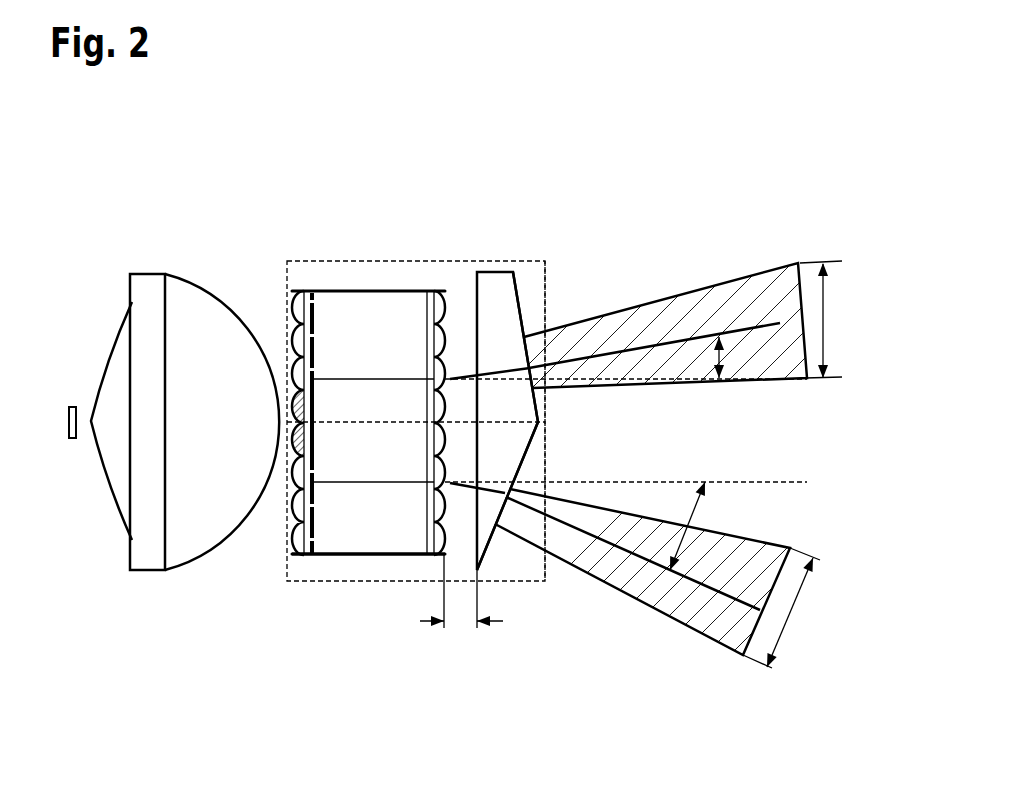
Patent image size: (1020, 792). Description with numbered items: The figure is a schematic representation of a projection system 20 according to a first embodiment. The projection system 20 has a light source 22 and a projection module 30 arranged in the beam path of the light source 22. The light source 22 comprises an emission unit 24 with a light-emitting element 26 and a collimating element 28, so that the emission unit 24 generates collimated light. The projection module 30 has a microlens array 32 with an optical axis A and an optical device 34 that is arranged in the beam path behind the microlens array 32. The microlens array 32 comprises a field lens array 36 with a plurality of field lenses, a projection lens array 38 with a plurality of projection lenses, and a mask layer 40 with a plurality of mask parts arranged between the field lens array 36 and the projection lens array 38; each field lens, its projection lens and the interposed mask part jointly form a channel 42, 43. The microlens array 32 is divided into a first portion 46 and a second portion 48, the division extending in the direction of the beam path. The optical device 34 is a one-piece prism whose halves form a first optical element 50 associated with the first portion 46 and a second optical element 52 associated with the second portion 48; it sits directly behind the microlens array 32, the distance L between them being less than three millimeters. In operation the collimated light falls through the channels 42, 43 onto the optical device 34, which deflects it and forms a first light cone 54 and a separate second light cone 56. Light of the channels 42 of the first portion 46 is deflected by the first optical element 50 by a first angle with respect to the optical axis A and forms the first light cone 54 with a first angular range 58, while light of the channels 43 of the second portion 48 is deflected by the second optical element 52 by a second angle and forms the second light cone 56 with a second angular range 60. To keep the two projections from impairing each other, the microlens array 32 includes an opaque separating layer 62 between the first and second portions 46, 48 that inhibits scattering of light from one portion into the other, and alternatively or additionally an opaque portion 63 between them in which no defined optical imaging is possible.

The projection system 20 is at (218, 166).
The light source 22 is at (122, 220).
The emission unit 24 is at (185, 387).
The light-emitting element 26 is at (72, 403).
The collimating element 28 is at (180, 303).
The projection module 30 is at (417, 250).
The microlens array 32 is at (389, 275).
The optical device 34 is at (508, 256).
The field lens array 36 is at (290, 293).
The projection lens array 38 is at (440, 288).
The mask layer 40 is at (316, 293).
The channel 42 is at (363, 300).
The channel 43 is at (367, 540).
The first portion 46 is at (388, 355).
The second portion 48 is at (388, 535).
The first optical element 50 is at (508, 305).
The second optical element 52 is at (510, 582).
The first light cone 54 is at (695, 315).
The second light cone 56 is at (600, 562).
The first angular range 58 is at (826, 308).
The second angular range 60 is at (812, 637).
The opaque separating layer 62 is at (333, 408).
The opaque portion 63 is at (330, 412).
The optical axis A is at (622, 367).
The distance L is at (462, 624).